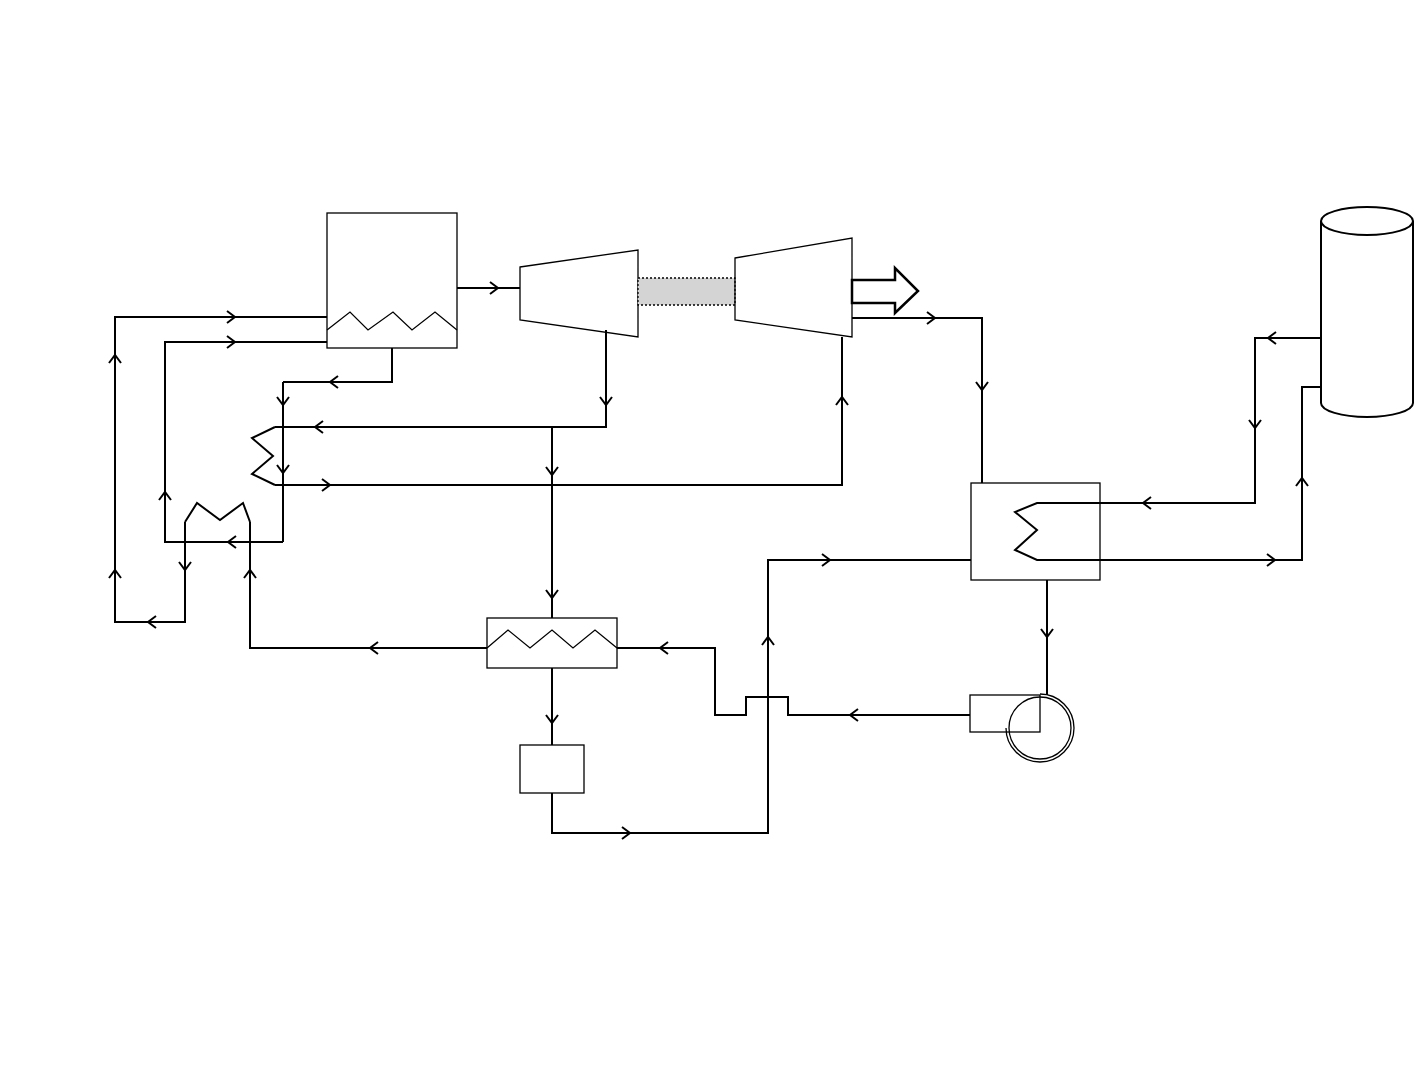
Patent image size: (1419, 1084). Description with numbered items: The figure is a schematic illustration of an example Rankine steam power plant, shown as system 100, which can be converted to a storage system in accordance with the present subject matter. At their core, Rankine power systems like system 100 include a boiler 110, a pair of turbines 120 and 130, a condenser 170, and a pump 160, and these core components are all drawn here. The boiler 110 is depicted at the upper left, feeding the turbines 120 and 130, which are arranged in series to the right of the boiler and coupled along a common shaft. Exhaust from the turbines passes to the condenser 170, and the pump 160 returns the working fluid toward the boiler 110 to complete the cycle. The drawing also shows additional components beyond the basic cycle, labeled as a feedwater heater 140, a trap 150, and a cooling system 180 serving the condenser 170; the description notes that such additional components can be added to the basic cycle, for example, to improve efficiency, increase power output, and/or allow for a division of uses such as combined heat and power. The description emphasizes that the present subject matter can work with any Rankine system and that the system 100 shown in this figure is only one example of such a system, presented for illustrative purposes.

The system 100 is at (1048, 180).
The boiler 110 is at (392, 280).
The turbine 120 is at (583, 238).
The turbine 130 is at (772, 237).
The feedwater heater 140 is at (571, 605).
The trap 150 is at (450, 770).
The pump 160 is at (1087, 725).
The condenser 170 is at (1030, 472).
The cooling system 180 is at (1367, 342).